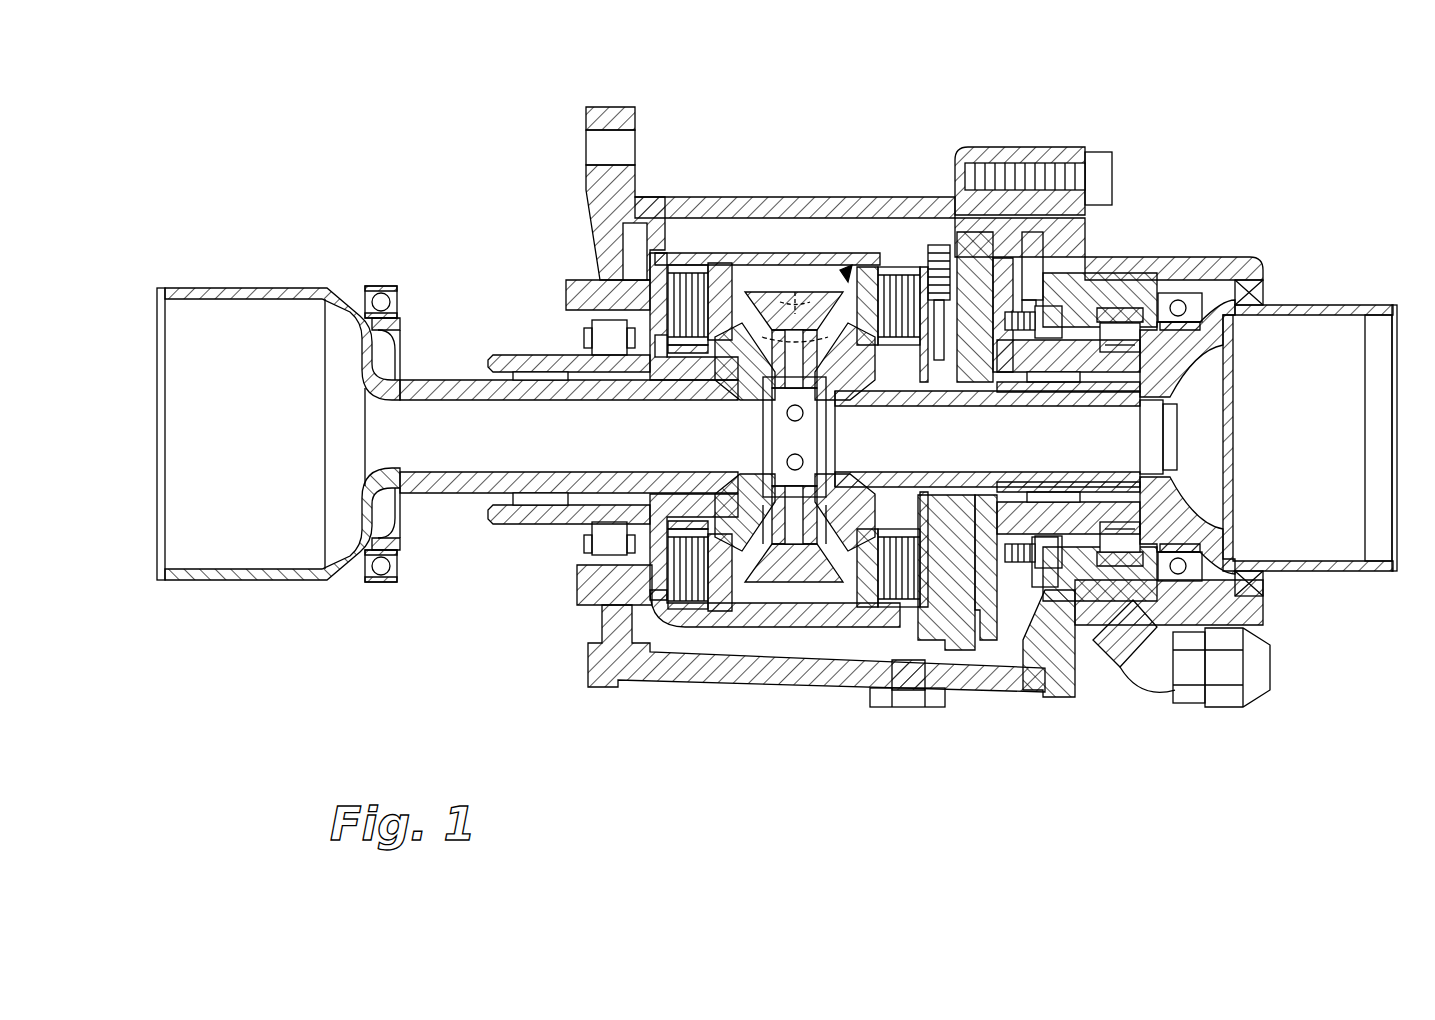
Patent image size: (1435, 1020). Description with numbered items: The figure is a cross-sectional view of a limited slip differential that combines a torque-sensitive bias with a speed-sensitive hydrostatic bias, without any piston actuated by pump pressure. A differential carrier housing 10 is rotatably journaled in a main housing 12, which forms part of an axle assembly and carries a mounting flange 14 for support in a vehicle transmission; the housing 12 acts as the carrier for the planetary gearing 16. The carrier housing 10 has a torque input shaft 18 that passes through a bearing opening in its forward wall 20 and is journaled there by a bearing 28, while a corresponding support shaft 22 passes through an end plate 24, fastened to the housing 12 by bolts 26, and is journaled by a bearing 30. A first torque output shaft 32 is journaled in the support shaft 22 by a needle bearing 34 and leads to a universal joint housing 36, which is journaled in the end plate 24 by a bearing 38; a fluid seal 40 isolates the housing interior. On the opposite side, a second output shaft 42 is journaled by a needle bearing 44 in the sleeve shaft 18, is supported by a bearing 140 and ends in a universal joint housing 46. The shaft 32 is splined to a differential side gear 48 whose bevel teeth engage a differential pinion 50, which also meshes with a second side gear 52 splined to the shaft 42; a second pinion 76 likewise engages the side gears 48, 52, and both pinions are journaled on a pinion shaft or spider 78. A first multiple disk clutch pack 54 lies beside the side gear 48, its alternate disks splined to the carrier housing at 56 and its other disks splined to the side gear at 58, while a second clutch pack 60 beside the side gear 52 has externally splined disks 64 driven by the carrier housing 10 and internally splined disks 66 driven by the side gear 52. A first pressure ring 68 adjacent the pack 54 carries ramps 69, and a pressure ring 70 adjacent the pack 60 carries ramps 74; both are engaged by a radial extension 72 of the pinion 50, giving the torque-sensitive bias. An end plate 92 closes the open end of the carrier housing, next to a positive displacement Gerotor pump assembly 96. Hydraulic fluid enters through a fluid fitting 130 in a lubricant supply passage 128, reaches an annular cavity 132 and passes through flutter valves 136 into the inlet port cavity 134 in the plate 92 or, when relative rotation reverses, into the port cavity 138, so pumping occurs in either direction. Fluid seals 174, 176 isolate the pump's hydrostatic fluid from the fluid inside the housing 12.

The differential carrier housing 10 is at (660, 250).
The main housing 12 is at (668, 200).
The mounting flange 14 is at (586, 118).
The planetary gearing 16 is at (848, 267).
The torque input shaft 18 is at (587, 360).
The forward wall 20 is at (608, 243).
The support shaft 22 is at (1135, 357).
The end plate 24 is at (1085, 245).
The bolts 26 is at (1048, 165).
The bearing 28 is at (613, 333).
The bearing 30 is at (1125, 325).
The first torque output shaft 32 is at (1117, 399).
The needle bearing 34 is at (1078, 372).
The universal joint housing 36 is at (1340, 316).
The bearing 38 is at (1180, 313).
The fluid seal 40 is at (1263, 293).
The second output shaft 42 is at (470, 388).
The needle bearing 44 is at (523, 374).
The universal joint housing 46 is at (232, 288).
The differential side gear 48 is at (892, 380).
The differential pinion 50 is at (815, 324).
The second differential side gear 52 is at (725, 357).
The first multiple disk clutch pack 54 is at (936, 300).
The spline connection to carrier housing 56 is at (893, 267).
The spline connection to side gear 58 is at (922, 380).
The second multiple disk clutch pack 60 is at (660, 347).
The externally splined disks 64 is at (700, 266).
The internal splines 66 is at (693, 345).
The first pressure ring 68 is at (855, 357).
The ramps 69 is at (790, 332).
The pressure ring 70 is at (667, 262).
The radial extension 72 is at (796, 292).
The ramps 74 is at (760, 300).
The second differential pinion 76 is at (755, 562).
The pinion shaft 78 is at (794, 532).
The end plate 92 is at (1005, 290).
The Gerotor pump assembly 96 is at (975, 290).
The lubricant supply passage 128 is at (1100, 605).
The fluid fitting 130 is at (1157, 686).
The annular cavity 132 is at (1050, 575).
The inlet port cavity 134 is at (985, 600).
The flutter valves 136 is at (1010, 565).
The port cavity 138 is at (1040, 380).
The bearing 140 is at (378, 286).
The fluid seal 174 is at (1068, 247).
The fluid seal 176 is at (1110, 540).